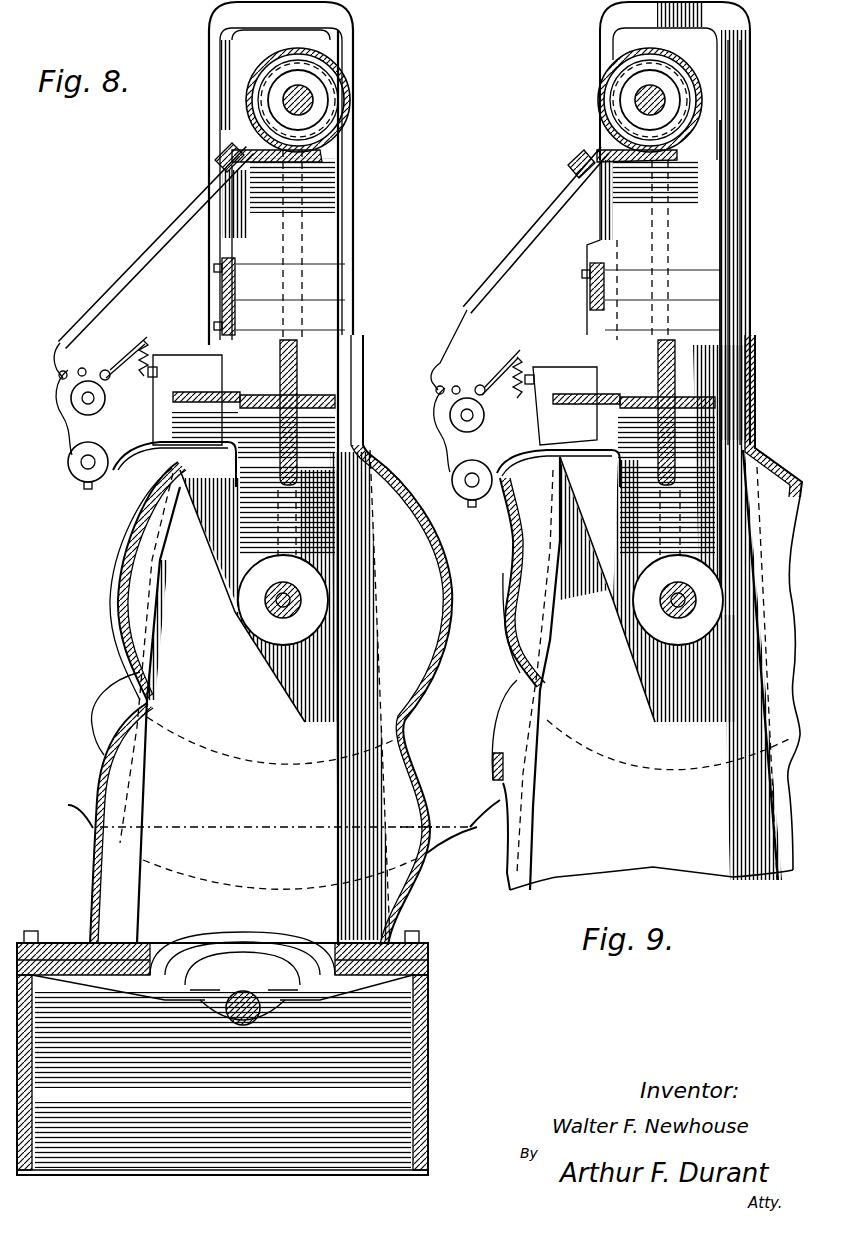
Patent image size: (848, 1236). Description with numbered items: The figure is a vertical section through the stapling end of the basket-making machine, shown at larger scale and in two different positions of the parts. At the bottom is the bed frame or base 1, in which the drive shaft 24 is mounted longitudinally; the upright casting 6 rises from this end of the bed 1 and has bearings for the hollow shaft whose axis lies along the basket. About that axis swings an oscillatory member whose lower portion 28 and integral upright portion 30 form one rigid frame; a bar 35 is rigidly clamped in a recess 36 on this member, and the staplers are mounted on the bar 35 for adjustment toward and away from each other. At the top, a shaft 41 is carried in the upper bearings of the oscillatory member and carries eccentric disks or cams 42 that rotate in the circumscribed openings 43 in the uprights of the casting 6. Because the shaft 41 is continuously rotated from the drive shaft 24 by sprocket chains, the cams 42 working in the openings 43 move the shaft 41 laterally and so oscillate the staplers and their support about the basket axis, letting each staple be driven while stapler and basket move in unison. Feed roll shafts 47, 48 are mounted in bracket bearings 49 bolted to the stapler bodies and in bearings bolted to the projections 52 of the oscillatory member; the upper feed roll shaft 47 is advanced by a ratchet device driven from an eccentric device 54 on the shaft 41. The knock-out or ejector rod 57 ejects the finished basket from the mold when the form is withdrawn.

In FIG. 8, the bed frame or base 1 is at (430, 1055).
In FIG. 8, the upright casting 6 is at (430, 950).
In FIG. 9, the upright casting 6 is at (562, 882).
In FIG. 8, the drive shaft 24 is at (246, 1025).
In FIG. 8, the lower portion 28 is at (286, 492).
In FIG. 9, the lower portion 28 is at (671, 492).
In FIG. 8, the upright portion 30 is at (272, 473).
In FIG. 9, the upright portion 30 is at (596, 446).
In FIG. 8, the bar 35 is at (222, 292).
In FIG. 9, the bar 35 is at (591, 296).
In FIG. 8, the recess 36 is at (238, 302).
In FIG. 9, the recess 36 is at (608, 308).
In FIG. 8, the shaft 41 is at (305, 102).
In FIG. 9, the shaft 41 is at (645, 102).
In FIG. 8, the eccentric disks or cams 42 is at (242, 96).
In FIG. 9, the eccentric disks or cams 42 is at (720, 108).
In FIG. 8, the circumscribed openings 43 is at (245, 40).
In FIG. 9, the circumscribed openings 43 is at (720, 48).
In FIG. 8, the upper feed roll shaft 47 is at (72, 400).
In FIG. 9, the upper feed roll shaft 47 is at (452, 418).
In FIG. 8, the feed roll shaft 48 is at (68, 463).
In FIG. 9, the feed roll shaft 48 is at (452, 474).
In FIG. 8, the bracket bearings 49 is at (188, 355).
In FIG. 9, the bracket bearings 49 is at (572, 366).
In FIG. 8, the projections 52 is at (160, 452).
In FIG. 9, the projections 52 is at (545, 462).
In FIG. 8, the eccentric device 54 is at (332, 58).
In FIG. 9, the eccentric device 54 is at (612, 64).
In FIG. 8, the knock-out or ejector rod 57 is at (283, 612).
In FIG. 9, the knock-out or ejector rod 57 is at (678, 612).